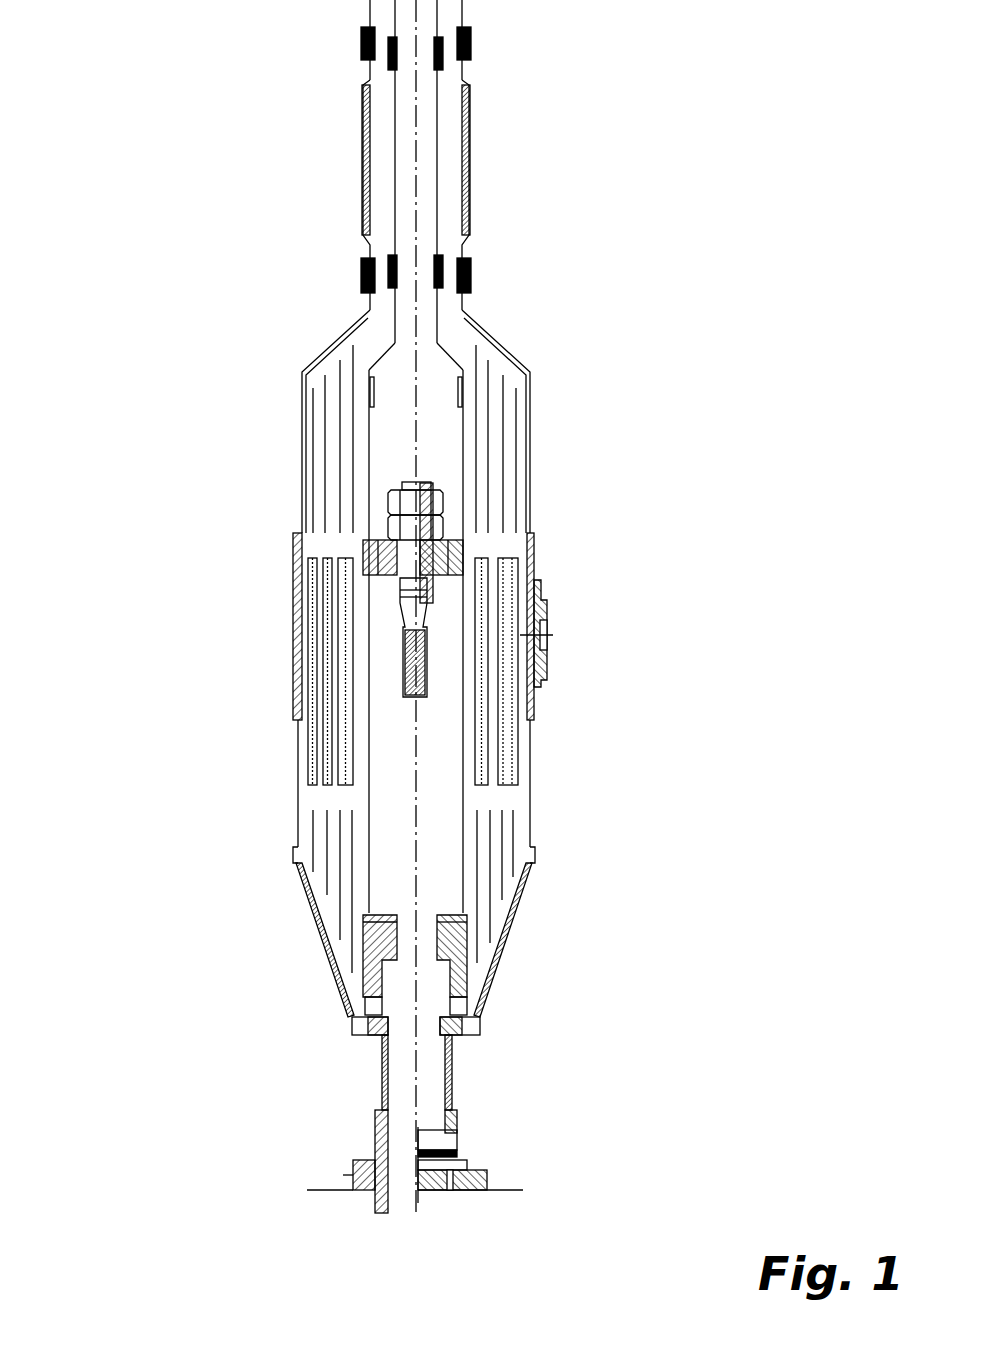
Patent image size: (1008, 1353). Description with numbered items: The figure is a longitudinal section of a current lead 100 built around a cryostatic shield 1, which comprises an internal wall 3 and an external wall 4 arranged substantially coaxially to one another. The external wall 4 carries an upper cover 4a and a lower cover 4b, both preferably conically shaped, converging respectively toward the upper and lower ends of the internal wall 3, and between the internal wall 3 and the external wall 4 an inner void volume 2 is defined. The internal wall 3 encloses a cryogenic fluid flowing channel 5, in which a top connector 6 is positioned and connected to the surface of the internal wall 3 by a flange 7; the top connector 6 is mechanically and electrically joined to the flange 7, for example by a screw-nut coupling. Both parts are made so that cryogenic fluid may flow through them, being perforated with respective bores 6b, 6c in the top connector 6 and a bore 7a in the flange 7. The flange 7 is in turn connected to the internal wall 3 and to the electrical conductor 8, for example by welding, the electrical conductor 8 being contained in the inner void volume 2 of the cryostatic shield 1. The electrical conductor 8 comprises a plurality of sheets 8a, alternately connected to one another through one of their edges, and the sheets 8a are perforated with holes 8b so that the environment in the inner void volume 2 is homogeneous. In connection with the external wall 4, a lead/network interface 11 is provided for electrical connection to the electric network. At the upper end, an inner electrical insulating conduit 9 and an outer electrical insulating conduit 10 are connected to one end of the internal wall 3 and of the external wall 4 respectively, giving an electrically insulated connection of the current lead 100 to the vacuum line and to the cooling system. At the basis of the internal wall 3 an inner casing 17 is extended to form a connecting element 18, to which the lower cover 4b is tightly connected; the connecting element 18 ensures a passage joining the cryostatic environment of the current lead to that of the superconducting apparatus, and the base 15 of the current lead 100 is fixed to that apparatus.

The cryostatic shield 1 is at (327, 801).
The inner void volume 2 is at (359, 447).
The internal wall 3 is at (344, 884).
The external wall 4 is at (358, 690).
The upper cover 4a is at (471, 406).
The lower cover 4b is at (380, 965).
The cryogenic fluid flowing channel 5 is at (516, 606).
The top connector 6 is at (382, 622).
The bore 6b is at (533, 453).
The bore 6c is at (549, 543).
The flange 7 is at (543, 509).
The bore 7a is at (271, 579).
The electrical conductor 8 is at (517, 737).
The sheets 8a is at (200, 714).
The holes 8b is at (609, 633).
The inner electrical insulating conduit 9 is at (478, 392).
The outer electrical insulating conduit 10 is at (479, 155).
The lead/network interface 11 is at (535, 665).
The base 15 is at (456, 1165).
The inner casing 17 is at (503, 965).
The connecting element 18 is at (480, 1124).
The current lead 100 is at (240, 700).